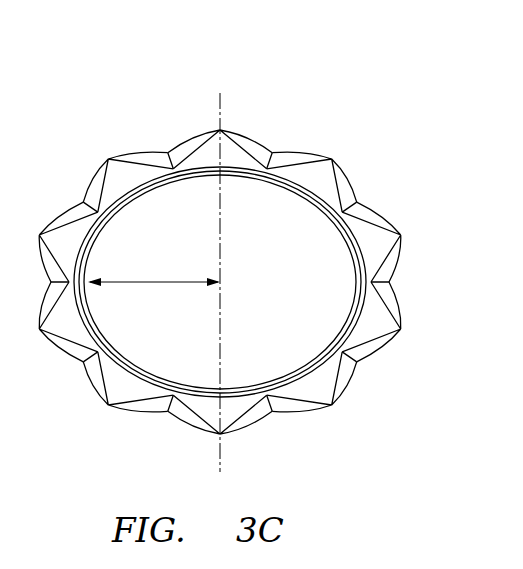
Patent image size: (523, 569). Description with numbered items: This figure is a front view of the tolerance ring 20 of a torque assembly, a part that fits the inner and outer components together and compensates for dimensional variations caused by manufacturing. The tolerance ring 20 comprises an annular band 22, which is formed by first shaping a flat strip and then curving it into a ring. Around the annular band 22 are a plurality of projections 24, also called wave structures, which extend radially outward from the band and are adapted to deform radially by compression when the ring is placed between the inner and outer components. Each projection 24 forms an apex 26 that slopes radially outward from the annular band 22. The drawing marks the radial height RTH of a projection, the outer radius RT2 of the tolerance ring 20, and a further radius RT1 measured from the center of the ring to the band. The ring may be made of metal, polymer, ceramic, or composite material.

The tolerance ring 20 is at (333, 159).
The annular band 22 is at (358, 202).
The projection 24 is at (402, 237).
The apex 26 is at (108, 159).
The inner radius RT1 is at (177, 280).
The outer radius RT2 is at (226, 148).
The radial height RTH is at (139, 157).